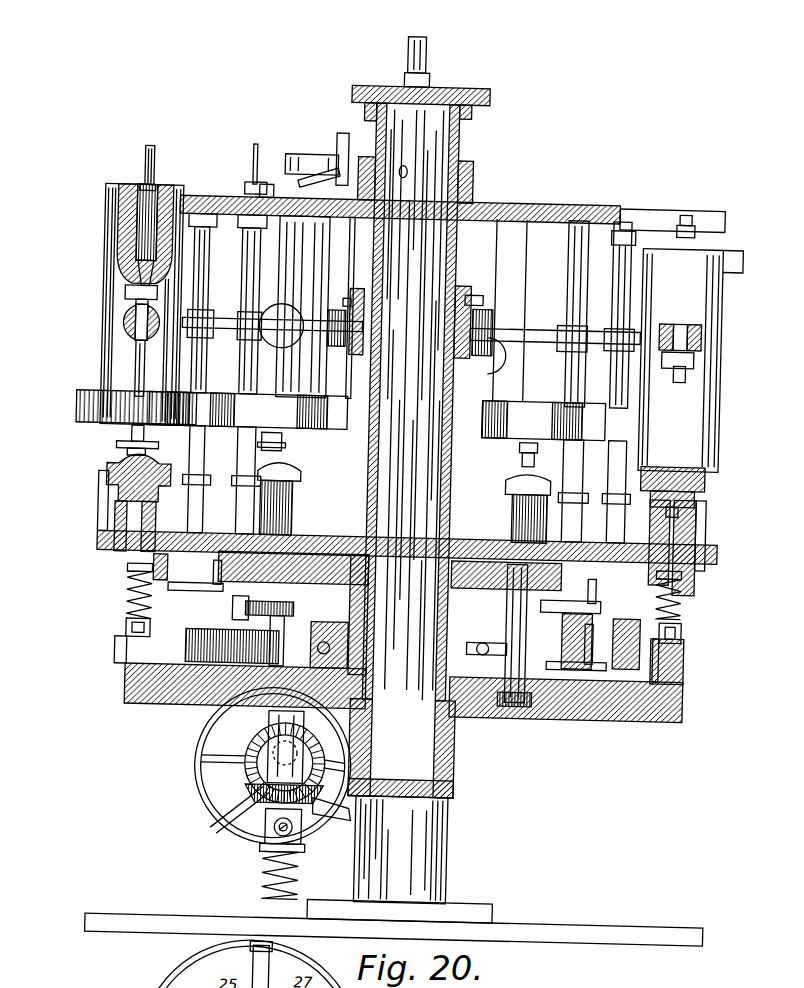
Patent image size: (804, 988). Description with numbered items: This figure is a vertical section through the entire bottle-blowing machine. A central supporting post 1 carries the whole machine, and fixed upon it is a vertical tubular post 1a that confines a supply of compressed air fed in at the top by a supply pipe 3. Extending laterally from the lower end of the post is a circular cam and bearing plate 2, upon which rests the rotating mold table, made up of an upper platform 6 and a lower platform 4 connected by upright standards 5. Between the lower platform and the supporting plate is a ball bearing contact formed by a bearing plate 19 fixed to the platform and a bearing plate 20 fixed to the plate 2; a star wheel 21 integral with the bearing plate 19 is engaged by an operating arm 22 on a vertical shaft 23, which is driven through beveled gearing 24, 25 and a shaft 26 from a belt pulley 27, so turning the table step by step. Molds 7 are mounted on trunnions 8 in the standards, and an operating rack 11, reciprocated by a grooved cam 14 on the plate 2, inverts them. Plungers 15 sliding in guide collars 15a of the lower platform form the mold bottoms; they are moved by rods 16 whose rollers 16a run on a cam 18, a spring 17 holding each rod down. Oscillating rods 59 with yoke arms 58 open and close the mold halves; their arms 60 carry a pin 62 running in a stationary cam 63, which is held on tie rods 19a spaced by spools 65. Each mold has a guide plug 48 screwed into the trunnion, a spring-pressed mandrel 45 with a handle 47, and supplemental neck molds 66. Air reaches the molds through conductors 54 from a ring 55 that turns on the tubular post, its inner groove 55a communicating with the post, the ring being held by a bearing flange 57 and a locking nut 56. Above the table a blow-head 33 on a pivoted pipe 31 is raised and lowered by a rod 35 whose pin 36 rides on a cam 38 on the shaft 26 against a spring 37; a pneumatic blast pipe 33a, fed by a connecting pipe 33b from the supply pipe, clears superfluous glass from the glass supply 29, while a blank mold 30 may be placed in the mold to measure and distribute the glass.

The central supporting post 1 is at (465, 850).
The vertical tubular post 1a is at (463, 138).
The circular cam and bearing plate 2 is at (182, 712).
The supply pipe 3 is at (428, 47).
The lower platform 4 is at (728, 552).
The upright standards 5 is at (140, 440).
The upper platform 6 is at (575, 203).
The mold 7 is at (413, 328).
The trunnion 8 is at (129, 330).
The operating rack 11 is at (605, 665).
The grooved cam 14 is at (697, 665).
The vertically reciprocating plunger 15 is at (116, 478).
The guide collar 15a is at (108, 500).
The rod 16 is at (125, 516).
The roller 16a is at (128, 680).
The spring 17 is at (139, 600).
The cam 18 is at (694, 632).
The bearing plate 19 is at (527, 700).
The tie rod 19a is at (545, 705).
The bearing plate 20 is at (496, 690).
The star wheel 21 is at (349, 747).
The operating arm 22 is at (263, 603).
The vertical shaft 23 is at (283, 630).
The beveled gear 24 is at (260, 815).
The beveled gear 25 is at (270, 796).
The shaft 26 is at (284, 745).
The belt pulley 27 is at (217, 792).
The glass supply 29 is at (146, 170).
The blank mold 30 is at (170, 196).
The pipe 31 is at (308, 165).
The blow-head 33 is at (257, 185).
The pneumatic blast pipe 33a is at (310, 168).
The connecting pipe 33b is at (343, 133).
The rod 35 is at (292, 452).
The pin 36 is at (290, 838).
The spring 37 is at (281, 885).
The cam 38 is at (331, 812).
The mandrel 45 is at (141, 312).
The handle 47 is at (690, 209).
The guide plug 48 is at (142, 388).
The air conductor 54 is at (308, 322).
The ring 55 is at (480, 312).
The groove 55a is at (498, 357).
The locking nut 56 is at (482, 300).
The bearing flange 57 is at (362, 358).
The yoke arm 58 is at (193, 332).
The oscillating rod 59 is at (230, 232).
The arm 60 is at (139, 590).
The pin 62 is at (139, 640).
The cam 63 is at (693, 590).
The spool 65 is at (602, 665).
The supplemental neck mold 66 is at (130, 298).